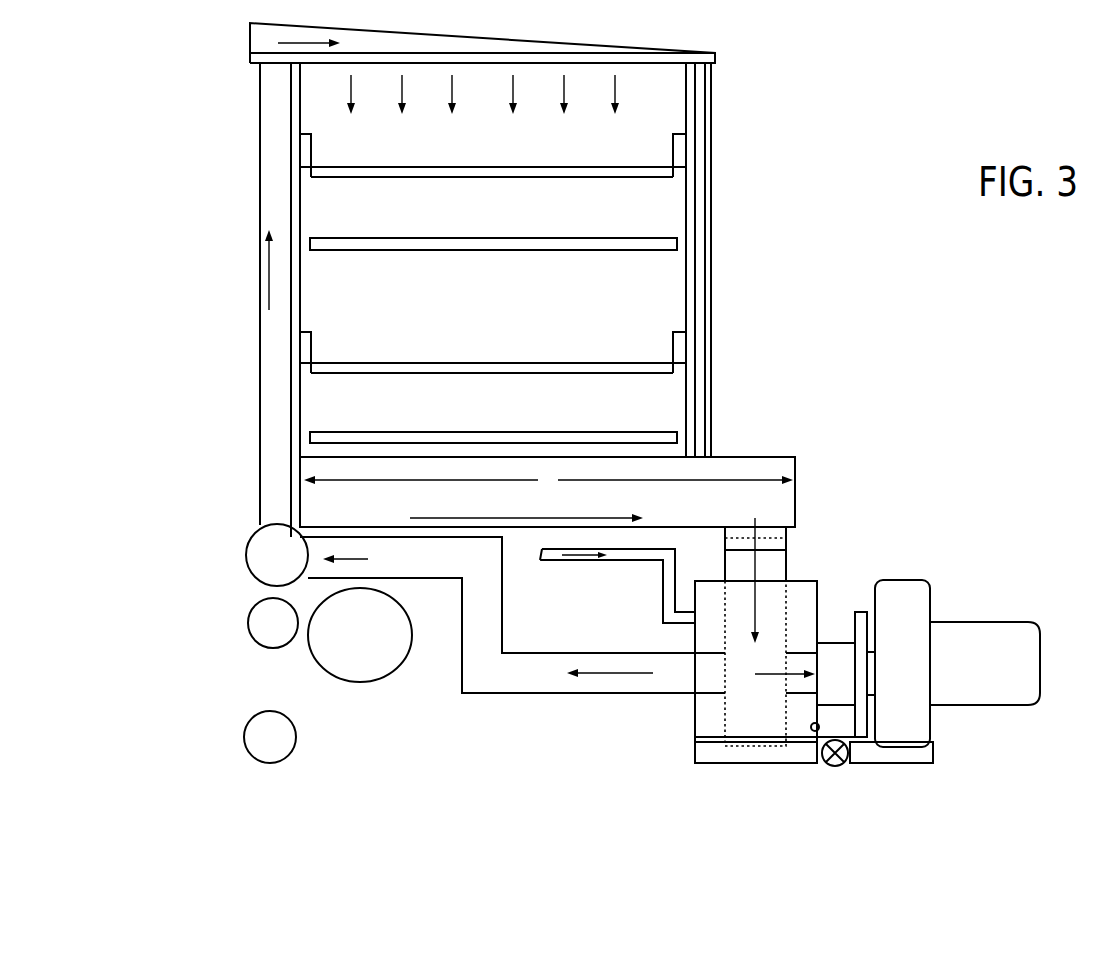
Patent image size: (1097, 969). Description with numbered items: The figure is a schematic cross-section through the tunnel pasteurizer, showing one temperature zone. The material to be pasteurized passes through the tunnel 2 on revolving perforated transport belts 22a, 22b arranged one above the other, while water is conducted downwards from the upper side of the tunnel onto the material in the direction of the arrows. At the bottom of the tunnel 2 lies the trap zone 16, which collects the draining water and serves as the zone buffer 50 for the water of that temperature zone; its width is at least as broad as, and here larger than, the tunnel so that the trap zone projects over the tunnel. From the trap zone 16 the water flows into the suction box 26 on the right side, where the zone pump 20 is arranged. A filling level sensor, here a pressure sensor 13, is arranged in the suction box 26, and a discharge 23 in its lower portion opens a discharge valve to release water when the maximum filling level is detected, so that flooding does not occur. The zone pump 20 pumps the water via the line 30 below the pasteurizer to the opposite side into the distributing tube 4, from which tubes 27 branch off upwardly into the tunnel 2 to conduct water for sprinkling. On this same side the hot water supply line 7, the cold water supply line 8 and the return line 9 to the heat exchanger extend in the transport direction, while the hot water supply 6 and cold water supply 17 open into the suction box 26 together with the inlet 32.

The tunnel 2 is at (713, 232).
The distributing tube 4 is at (249, 540).
The hot water supply 6 is at (617, 591).
The hot water supply line 7 is at (248, 626).
The cold water supply line 8 is at (246, 744).
The return line 9 is at (341, 671).
The pressure sensor 13 is at (812, 733).
The trap zone 16 is at (311, 498).
The cold water supply 17 is at (663, 620).
The zone pump 20 is at (1008, 633).
The transport belt 22a is at (422, 167).
The transport belt 22b is at (422, 363).
The discharge 23 is at (824, 768).
The suction box 26 is at (805, 617).
The tube 27 is at (259, 309).
The line 30 is at (516, 686).
The inlet pipe 32 is at (773, 604).
The zone buffer 50 is at (461, 508).